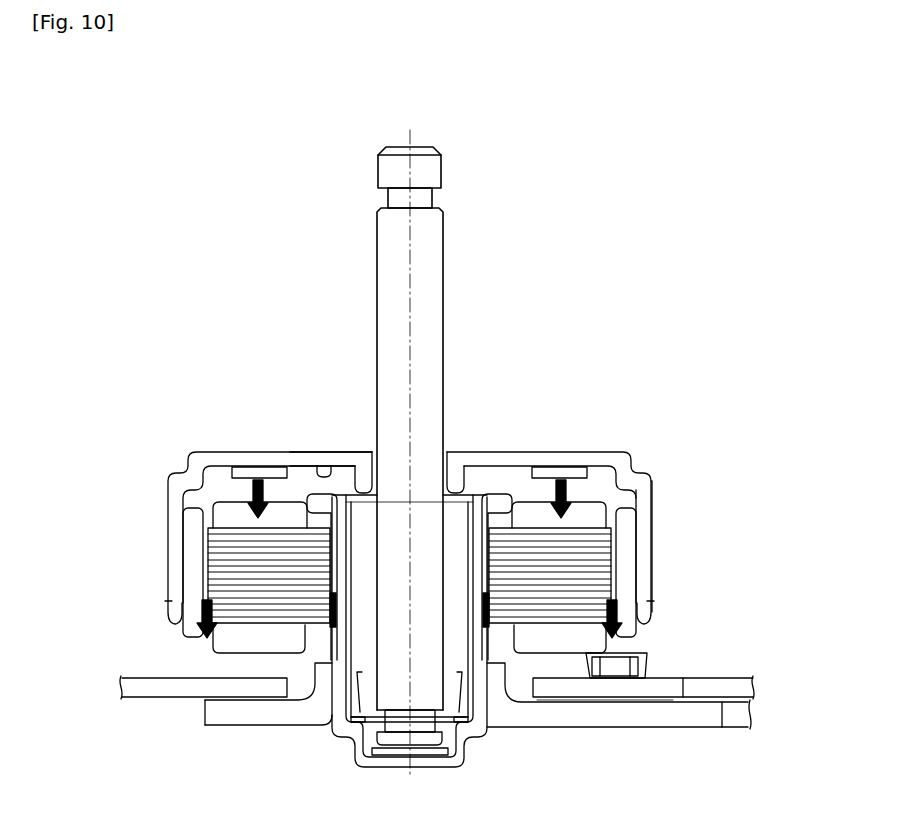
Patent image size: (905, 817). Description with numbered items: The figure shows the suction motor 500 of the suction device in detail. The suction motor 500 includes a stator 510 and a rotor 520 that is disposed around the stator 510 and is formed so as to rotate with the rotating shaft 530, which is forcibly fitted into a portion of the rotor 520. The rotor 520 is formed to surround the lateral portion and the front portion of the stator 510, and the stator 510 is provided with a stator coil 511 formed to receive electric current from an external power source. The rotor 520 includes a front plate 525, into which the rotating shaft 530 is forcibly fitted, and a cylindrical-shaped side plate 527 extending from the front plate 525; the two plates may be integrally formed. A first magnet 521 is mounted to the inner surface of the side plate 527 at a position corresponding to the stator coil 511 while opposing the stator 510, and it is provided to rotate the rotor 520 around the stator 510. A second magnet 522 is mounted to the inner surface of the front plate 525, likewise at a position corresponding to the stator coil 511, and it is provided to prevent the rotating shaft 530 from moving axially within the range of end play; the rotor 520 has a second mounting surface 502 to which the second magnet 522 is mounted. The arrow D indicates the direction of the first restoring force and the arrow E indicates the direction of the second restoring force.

The suction motor 500 is at (258, 95).
The second mounting surface 502 is at (330, 473).
The stator 510 is at (210, 647).
The stator coil 511 is at (220, 594).
The rotor 520 is at (167, 547).
The first magnet 521 is at (190, 520).
The second magnet 522 is at (260, 470).
The front plate 525 is at (493, 458).
The side plate 527 is at (652, 556).
The rotating shaft 530 is at (433, 247).